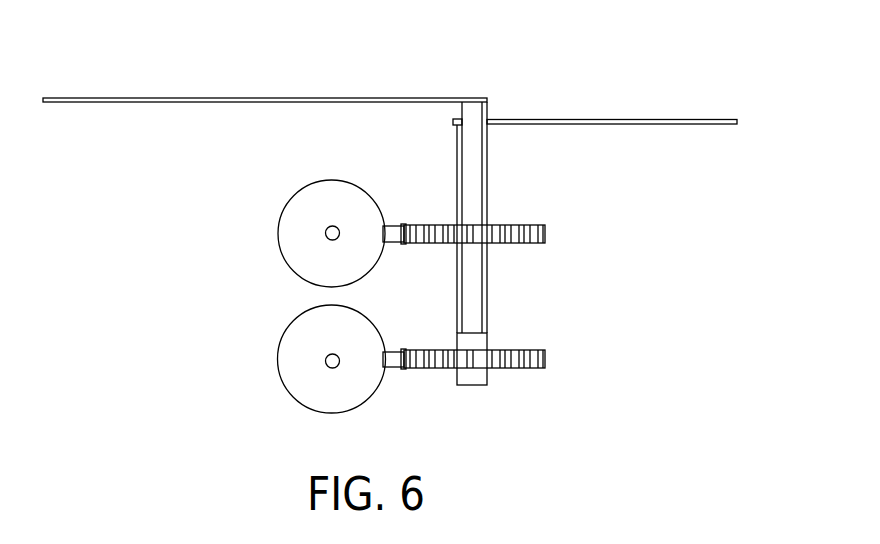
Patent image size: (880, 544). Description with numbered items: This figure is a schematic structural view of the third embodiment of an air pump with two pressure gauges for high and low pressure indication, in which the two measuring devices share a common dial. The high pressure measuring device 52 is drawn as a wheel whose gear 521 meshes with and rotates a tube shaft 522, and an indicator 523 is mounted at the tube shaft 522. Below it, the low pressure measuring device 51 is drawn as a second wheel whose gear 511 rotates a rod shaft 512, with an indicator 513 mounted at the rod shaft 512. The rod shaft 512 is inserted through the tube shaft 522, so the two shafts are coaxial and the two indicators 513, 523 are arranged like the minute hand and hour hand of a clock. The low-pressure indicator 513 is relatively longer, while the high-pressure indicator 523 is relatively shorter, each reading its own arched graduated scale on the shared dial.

The indicator 513 is at (235, 98).
The indicator 523 is at (676, 119).
The tube shaft 522 is at (487, 159).
The rod shaft 512 is at (487, 299).
The gear 521 is at (547, 234).
The gear 511 is at (547, 360).
The high pressure measuring device 52 is at (285, 240).
The low pressure measuring device 51 is at (285, 367).